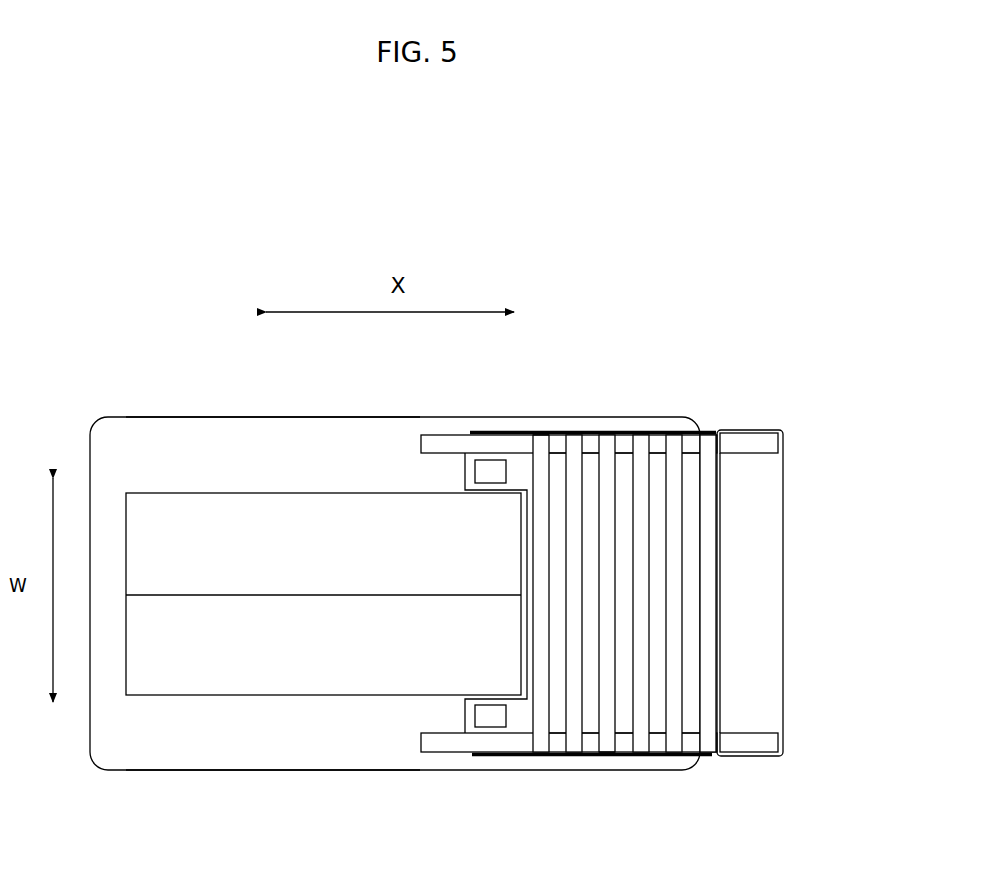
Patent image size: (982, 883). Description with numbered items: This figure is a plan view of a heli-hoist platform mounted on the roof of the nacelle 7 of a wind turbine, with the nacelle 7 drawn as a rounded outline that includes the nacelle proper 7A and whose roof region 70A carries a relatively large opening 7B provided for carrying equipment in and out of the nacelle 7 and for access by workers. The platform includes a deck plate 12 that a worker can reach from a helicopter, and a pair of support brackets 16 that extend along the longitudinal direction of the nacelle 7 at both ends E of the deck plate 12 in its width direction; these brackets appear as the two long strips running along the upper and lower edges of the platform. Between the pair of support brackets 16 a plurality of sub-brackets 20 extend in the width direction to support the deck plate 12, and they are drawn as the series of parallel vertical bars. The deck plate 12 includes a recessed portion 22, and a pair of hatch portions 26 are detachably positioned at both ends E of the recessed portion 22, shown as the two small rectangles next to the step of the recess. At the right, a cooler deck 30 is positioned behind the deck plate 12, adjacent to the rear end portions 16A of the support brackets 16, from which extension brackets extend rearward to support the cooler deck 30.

The nacelle 7 is at (601, 256).
The nacelle proper 7A is at (170, 770).
The opening 7B is at (172, 493).
The heater region 70A is at (280, 752).
The deck plate 12 is at (691, 718).
The support brackets 16 is at (432, 444).
The rear end portions 16A is at (722, 762).
The sub-brackets 20 is at (543, 445).
The recessed portion 22 is at (519, 708).
The hatch portions 26 is at (497, 476).
The cooler deck 30 is at (781, 686).
The ends E is at (537, 445).